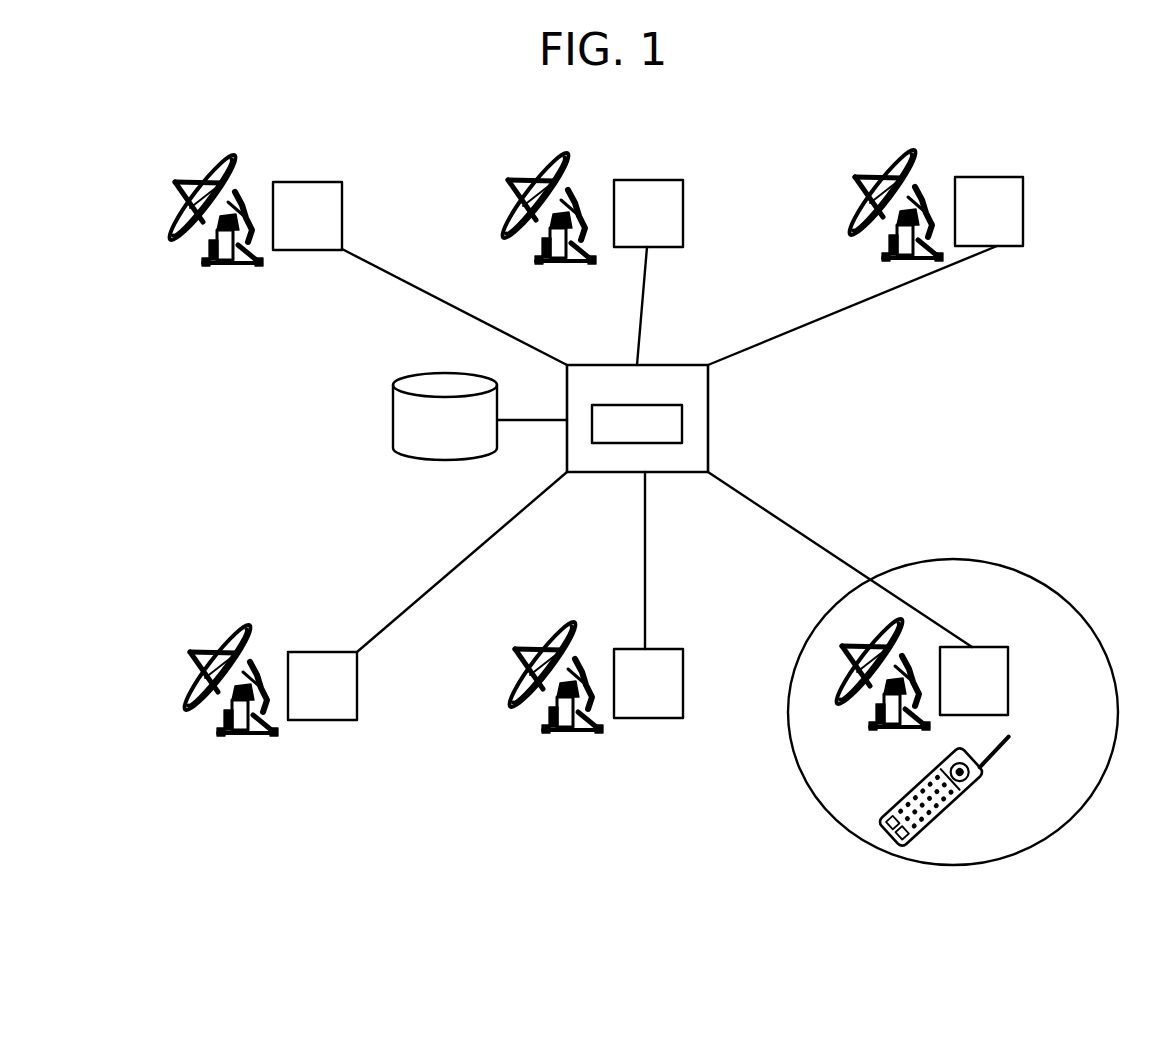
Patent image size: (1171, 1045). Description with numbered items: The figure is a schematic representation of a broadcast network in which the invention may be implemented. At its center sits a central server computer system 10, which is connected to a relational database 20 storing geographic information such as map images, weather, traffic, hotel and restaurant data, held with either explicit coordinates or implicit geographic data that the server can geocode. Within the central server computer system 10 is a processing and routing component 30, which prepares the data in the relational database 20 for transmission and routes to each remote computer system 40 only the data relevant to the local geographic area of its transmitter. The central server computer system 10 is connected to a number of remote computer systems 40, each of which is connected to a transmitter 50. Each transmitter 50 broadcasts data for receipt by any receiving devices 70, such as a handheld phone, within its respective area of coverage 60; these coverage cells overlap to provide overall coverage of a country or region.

The central server computer system 10 is at (621, 397).
The relational database 20 is at (431, 440).
The processing and routing component 30 is at (621, 437).
The remote computer system 40 is at (634, 696).
The transmitter 50 is at (852, 700).
The area of coverage 60 is at (960, 560).
The receiving device 70 is at (955, 803).